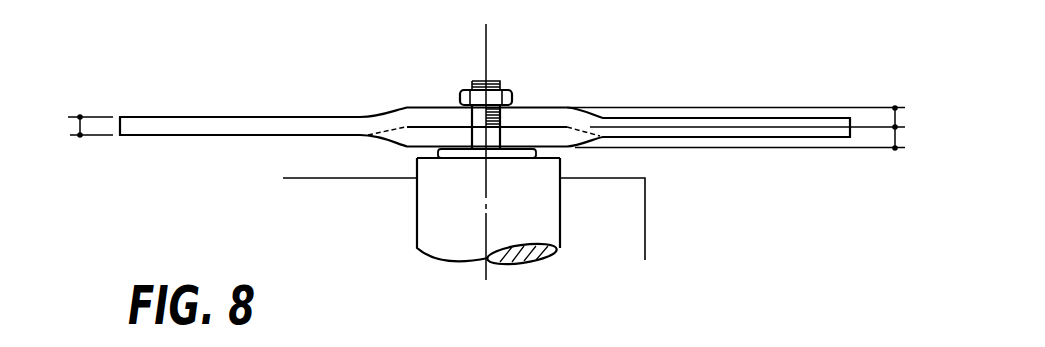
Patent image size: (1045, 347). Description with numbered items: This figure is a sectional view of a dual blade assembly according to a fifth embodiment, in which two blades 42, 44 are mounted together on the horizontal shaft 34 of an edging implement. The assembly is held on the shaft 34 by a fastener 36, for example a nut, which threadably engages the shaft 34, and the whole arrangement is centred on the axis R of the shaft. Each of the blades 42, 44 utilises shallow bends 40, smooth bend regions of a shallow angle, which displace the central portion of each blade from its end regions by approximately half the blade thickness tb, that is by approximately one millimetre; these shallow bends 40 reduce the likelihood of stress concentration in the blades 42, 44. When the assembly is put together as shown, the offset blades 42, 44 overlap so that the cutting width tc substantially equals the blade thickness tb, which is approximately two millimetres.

The horizontal shaft 34 is at (467, 137).
The fastener 36 is at (464, 99).
The shallow bends 40 is at (395, 107).
The blade 42 is at (534, 115).
The blade 44 is at (547, 139).
The axis of rotation R is at (489, 43).
The cutting width tc is at (80, 127).
The blade thickness tb is at (898, 118).